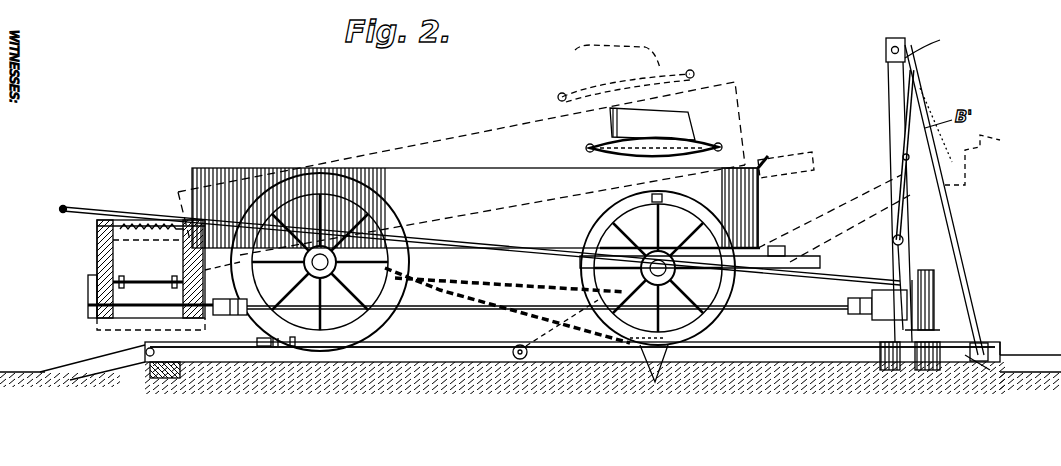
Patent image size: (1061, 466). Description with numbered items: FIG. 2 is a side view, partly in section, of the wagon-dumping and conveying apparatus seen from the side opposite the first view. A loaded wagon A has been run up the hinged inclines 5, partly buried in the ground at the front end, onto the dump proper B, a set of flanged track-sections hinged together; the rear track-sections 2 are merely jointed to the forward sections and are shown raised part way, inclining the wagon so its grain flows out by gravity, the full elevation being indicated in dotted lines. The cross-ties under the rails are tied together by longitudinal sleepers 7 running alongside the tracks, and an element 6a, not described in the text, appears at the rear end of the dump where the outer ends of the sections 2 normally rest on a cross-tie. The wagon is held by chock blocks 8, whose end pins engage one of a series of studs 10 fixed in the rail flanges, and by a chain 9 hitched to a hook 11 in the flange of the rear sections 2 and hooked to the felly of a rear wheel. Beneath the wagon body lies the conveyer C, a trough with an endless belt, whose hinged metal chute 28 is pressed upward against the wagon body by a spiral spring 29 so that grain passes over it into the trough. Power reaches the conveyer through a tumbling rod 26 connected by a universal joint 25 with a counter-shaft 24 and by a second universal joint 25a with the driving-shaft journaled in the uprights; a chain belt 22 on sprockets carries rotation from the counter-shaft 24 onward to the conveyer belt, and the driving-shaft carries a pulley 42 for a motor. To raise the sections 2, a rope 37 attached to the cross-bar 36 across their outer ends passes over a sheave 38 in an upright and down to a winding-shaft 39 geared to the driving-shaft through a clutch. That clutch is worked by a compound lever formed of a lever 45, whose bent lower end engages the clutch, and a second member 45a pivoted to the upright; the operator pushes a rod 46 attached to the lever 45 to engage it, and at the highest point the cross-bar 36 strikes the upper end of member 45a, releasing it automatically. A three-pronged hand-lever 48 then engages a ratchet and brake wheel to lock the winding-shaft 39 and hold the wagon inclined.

The rear track-sections 2 is at (822, 210).
The hinged inclines 5 is at (92, 362).
The ground plate 6a is at (1015, 358).
The sleepers 7 is at (572, 351).
The blocks 8 is at (262, 346).
The chain 9 is at (518, 312).
The studs or pins 10 is at (300, 345).
The hooks 11 is at (653, 380).
The chain belt 22 is at (88, 298).
The counter-shaft 24 is at (118, 325).
The universal joint 25 is at (233, 314).
The universal joint 25a is at (852, 300).
The tumbling rod or shaft 26 is at (782, 305).
The chute 28 is at (147, 280).
The spiral spring 29 is at (152, 235).
The cross-bar 36 is at (975, 368).
The rope 37 is at (930, 42).
The sheave 38 is at (905, 42).
The winding-shaft 39 is at (880, 352).
The pulley 42 is at (965, 283).
The lever 45 is at (900, 260).
The second lever member 45a is at (918, 77).
The rod 46 is at (108, 212).
The hand-lever 48 is at (936, 356).
The wagon A is at (506, 212).
The dump proper B is at (572, 345).
The conveyer C is at (153, 269).